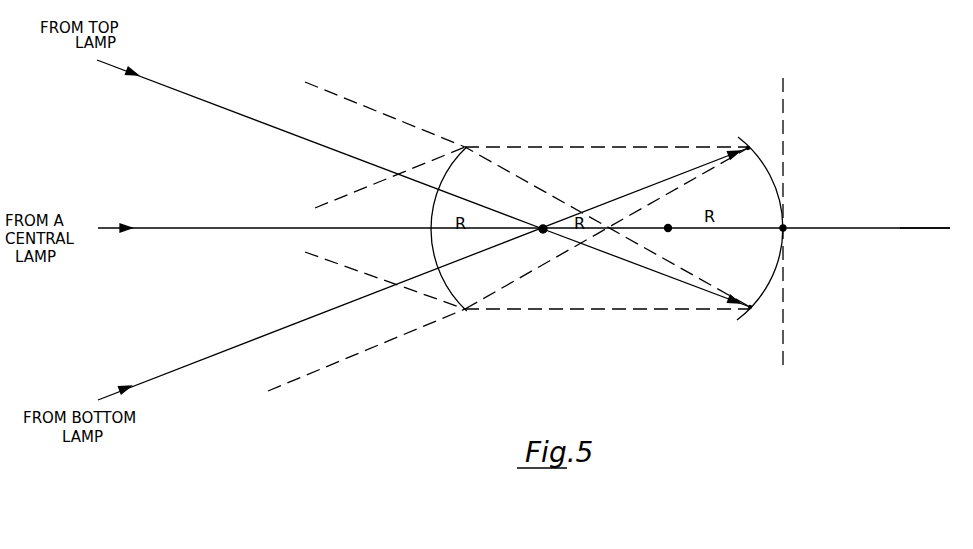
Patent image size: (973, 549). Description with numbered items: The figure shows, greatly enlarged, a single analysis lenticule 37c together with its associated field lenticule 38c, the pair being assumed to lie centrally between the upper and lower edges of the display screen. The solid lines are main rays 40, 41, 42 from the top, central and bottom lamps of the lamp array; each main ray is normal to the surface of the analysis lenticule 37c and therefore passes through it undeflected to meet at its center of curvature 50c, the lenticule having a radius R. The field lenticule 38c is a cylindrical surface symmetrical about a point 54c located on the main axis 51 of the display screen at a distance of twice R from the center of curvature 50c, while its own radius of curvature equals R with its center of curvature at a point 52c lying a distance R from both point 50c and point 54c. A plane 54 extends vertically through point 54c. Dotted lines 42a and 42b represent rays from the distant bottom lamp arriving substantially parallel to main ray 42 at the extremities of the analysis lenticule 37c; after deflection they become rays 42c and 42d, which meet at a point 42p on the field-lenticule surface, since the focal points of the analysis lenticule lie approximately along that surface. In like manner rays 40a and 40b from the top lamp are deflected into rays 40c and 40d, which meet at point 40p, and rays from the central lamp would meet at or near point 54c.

The main ray 40 is at (283, 132).
The ray 40a is at (336, 96).
The ray 40b is at (371, 272).
The deflected ray 40c is at (712, 291).
The deflected ray 40d is at (612, 308).
The point 40p is at (765, 306).
The main ray 41 is at (238, 231).
The main ray 42 is at (250, 345).
The ray 42a is at (327, 201).
The ray 42b is at (322, 368).
The deflected ray 42c is at (546, 147).
The deflected ray 42d is at (531, 259).
The point 42p is at (748, 147).
The analysis lenticule 37c is at (452, 165).
The field lenticule 38c is at (778, 178).
The center of curvature 50c is at (541, 225).
The center of curvature 52c is at (670, 232).
The plane 54 is at (786, 122).
The point 54c is at (785, 228).
The main axis 51 is at (879, 228).